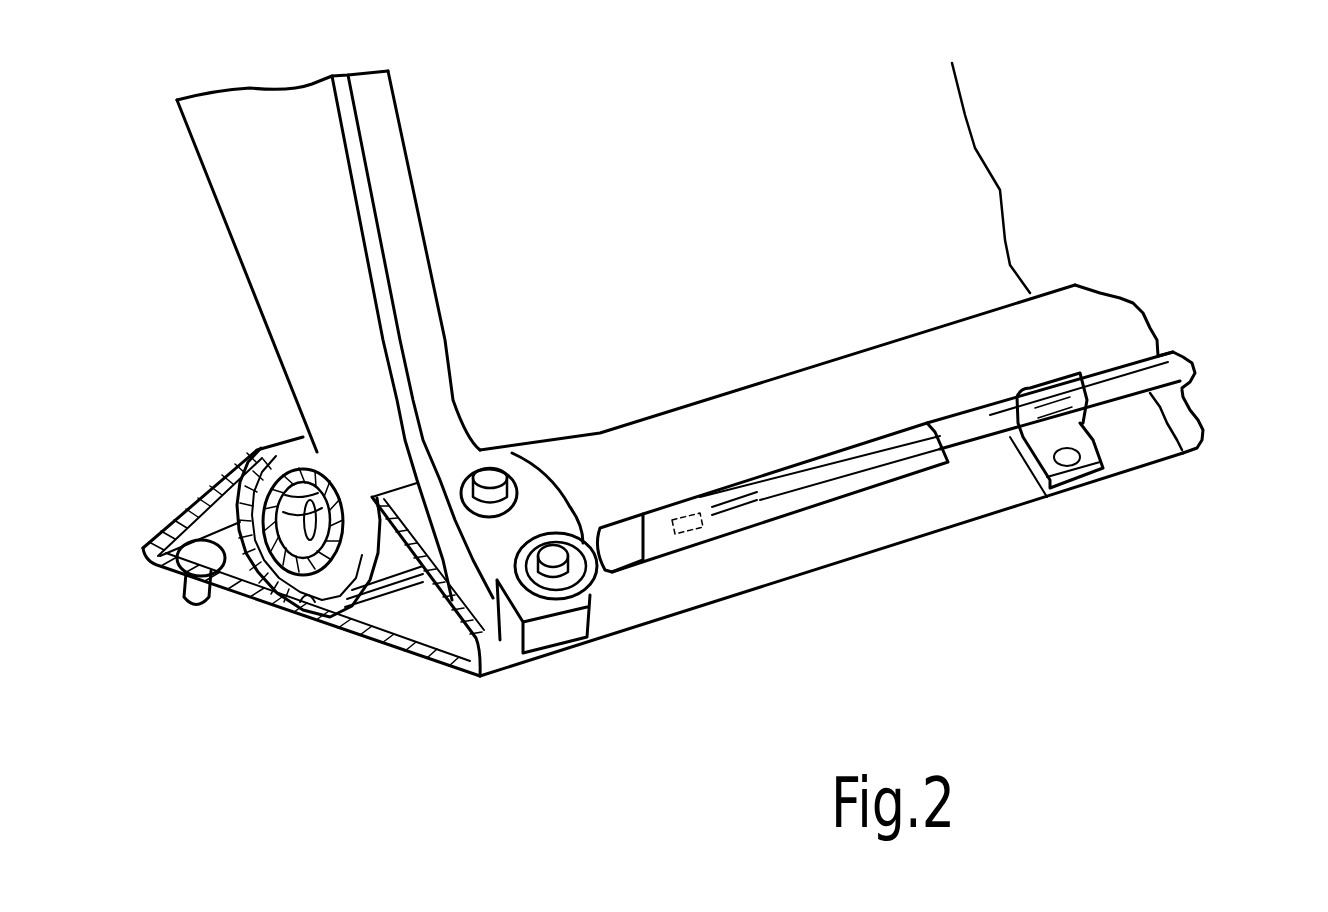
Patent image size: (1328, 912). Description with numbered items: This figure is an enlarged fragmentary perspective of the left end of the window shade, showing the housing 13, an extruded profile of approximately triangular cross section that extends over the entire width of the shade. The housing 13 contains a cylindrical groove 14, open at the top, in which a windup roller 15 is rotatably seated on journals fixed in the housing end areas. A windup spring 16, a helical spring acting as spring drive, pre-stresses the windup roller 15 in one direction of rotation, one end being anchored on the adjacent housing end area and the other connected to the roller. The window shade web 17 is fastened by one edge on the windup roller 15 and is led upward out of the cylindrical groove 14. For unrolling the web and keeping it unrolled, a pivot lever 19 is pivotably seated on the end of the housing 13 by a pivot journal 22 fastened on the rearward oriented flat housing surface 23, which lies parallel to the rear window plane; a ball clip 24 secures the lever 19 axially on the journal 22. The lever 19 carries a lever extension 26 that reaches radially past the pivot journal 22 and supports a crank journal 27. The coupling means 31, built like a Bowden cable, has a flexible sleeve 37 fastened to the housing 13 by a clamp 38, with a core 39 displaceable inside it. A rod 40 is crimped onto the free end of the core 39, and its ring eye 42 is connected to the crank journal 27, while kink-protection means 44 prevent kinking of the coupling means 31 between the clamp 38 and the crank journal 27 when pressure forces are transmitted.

The housing 13 is at (380, 656).
The cylindrical groove 14 is at (298, 610).
The windup roller 15 is at (281, 473).
The windup spring 16 is at (233, 593).
The window shade web 17 is at (690, 209).
The pivot lever 19 is at (390, 213).
The pivot journal 22 is at (490, 478).
The housing surface 23 is at (722, 457).
The ball clip 24 is at (517, 488).
The lever extension 26 is at (493, 560).
The crank journal 27 is at (587, 590).
The coupling means 31 is at (1133, 350).
The flexible sleeve 37 is at (1183, 453).
The clamp 38 is at (1038, 385).
The core 39 is at (987, 437).
The rod 40 is at (650, 533).
The ring eye 42 is at (557, 593).
The kink-protection means 44 is at (861, 412).